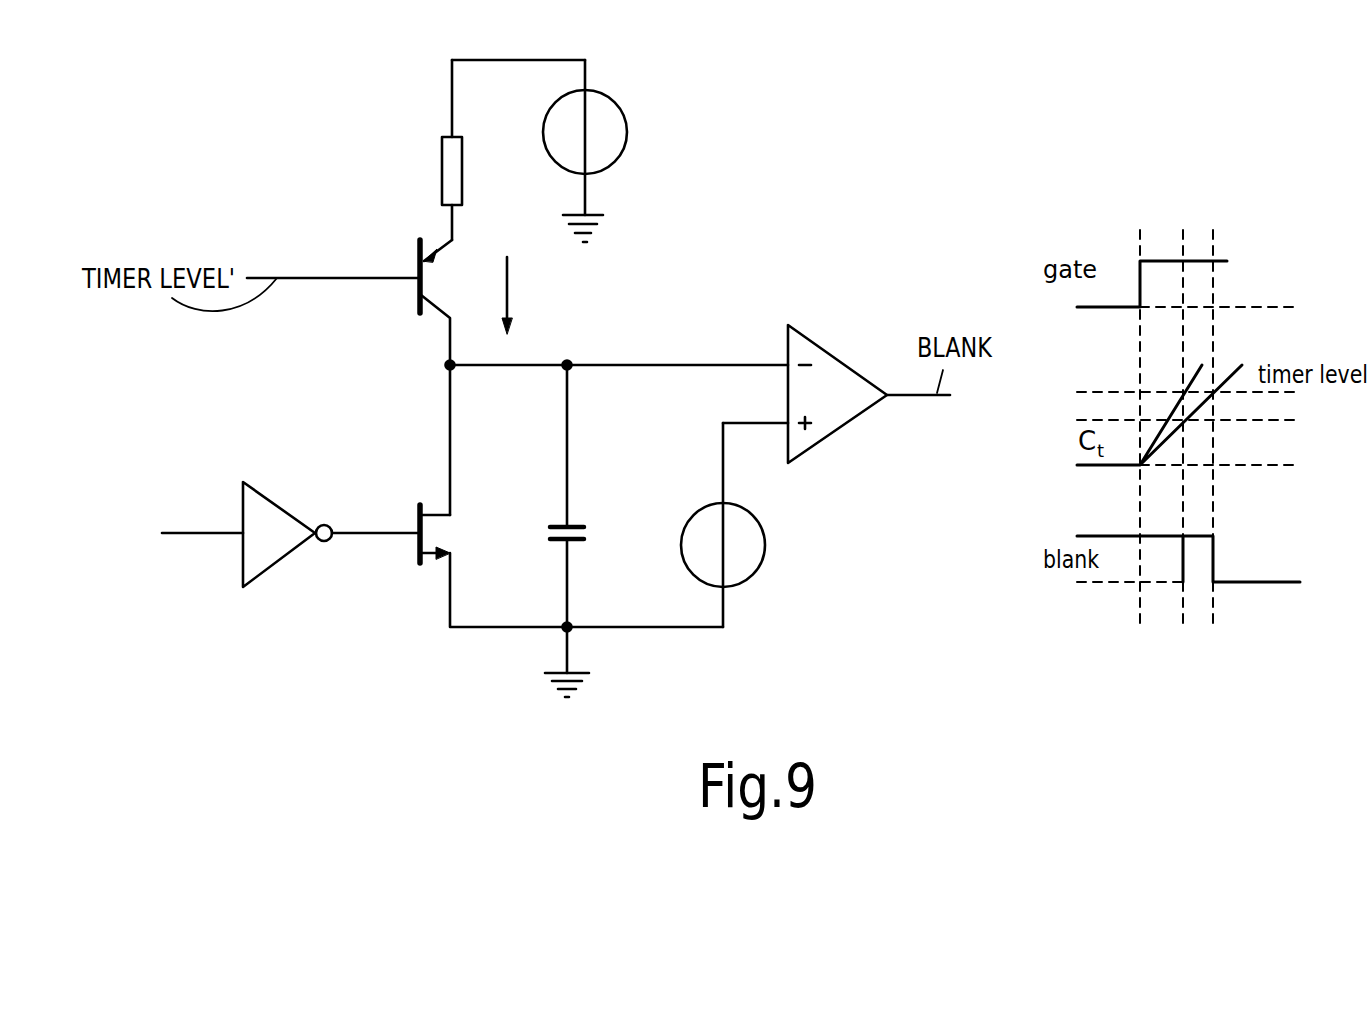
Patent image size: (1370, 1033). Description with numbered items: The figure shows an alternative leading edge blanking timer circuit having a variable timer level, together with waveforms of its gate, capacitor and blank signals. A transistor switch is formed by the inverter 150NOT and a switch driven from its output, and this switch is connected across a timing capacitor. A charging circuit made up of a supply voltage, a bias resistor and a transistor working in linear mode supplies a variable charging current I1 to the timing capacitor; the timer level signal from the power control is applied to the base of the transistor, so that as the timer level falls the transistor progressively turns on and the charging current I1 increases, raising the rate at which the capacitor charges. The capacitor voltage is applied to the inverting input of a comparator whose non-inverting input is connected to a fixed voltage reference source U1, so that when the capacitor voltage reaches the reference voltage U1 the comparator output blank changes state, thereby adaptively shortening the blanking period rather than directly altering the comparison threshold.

The charging current I1 is at (517, 295).
The inverter 150NOT is at (278, 517).
The fixed voltage reference source U1 is at (738, 572).